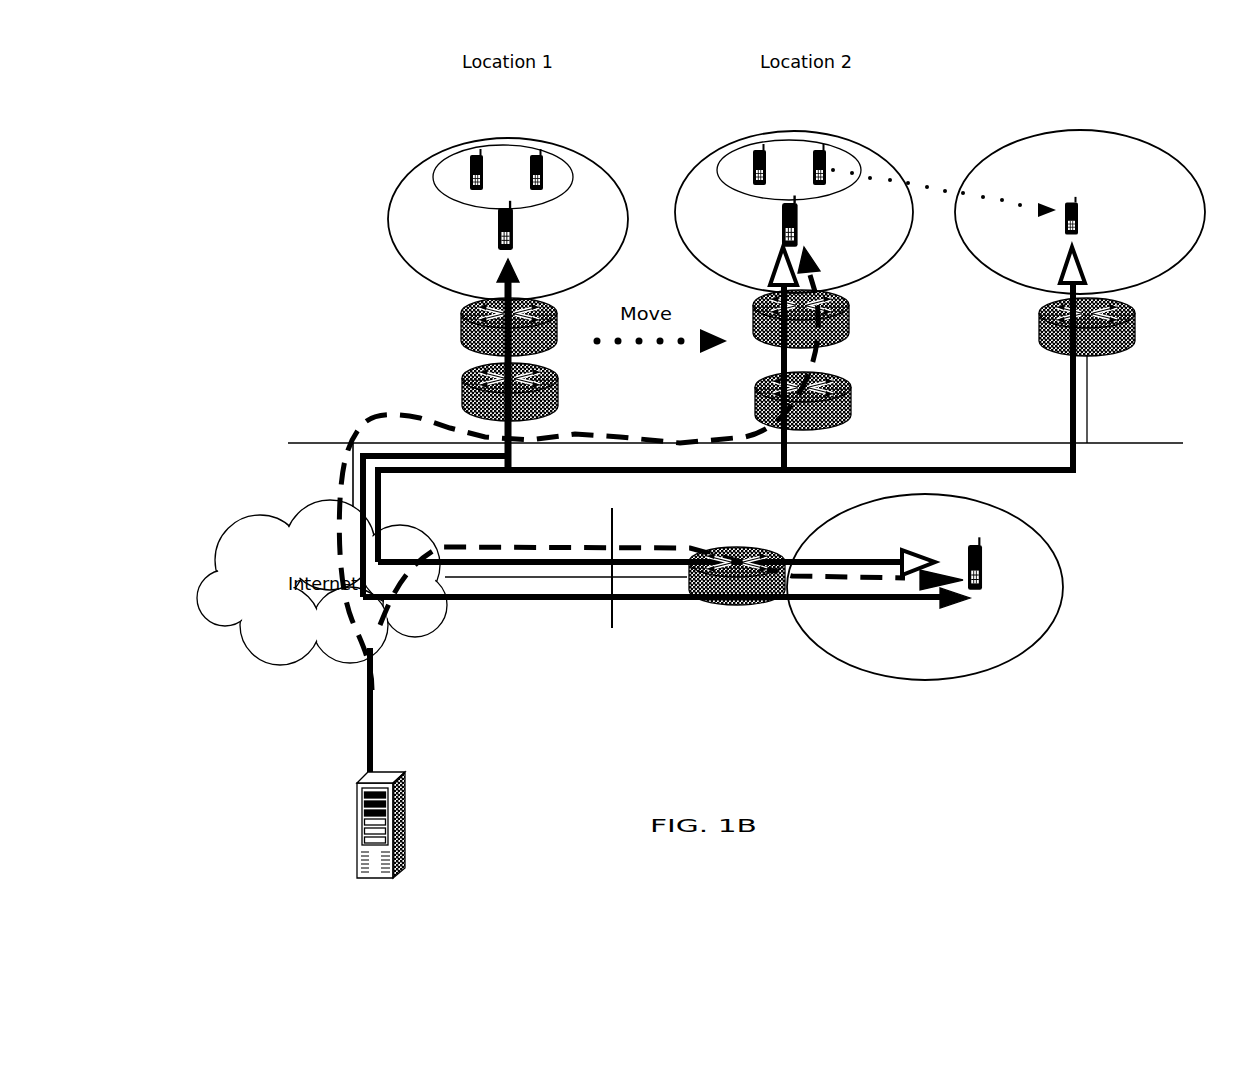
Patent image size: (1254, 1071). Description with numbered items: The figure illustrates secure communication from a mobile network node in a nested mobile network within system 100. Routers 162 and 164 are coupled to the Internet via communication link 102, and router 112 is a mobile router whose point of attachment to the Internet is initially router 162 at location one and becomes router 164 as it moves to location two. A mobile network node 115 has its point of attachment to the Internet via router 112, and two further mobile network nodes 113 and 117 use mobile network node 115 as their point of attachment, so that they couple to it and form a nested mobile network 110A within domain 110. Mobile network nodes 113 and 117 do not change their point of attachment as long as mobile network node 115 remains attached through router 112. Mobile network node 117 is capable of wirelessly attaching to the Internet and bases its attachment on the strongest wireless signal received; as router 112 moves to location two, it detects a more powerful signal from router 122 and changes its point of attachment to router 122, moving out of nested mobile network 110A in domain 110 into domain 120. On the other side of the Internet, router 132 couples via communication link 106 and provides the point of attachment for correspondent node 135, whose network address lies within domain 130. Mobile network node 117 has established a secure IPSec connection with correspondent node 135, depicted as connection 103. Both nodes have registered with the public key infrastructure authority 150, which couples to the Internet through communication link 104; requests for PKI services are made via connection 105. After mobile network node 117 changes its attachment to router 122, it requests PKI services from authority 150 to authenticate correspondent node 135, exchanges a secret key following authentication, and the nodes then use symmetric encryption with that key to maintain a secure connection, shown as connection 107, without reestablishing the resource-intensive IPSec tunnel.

The system 100 is at (314, 94).
The domain 110 is at (426, 263).
The nested mobile network 110A is at (440, 180).
The mobile network node 113 is at (470, 168).
The mobile network node 117 is at (530, 172).
The mobile network node 115 is at (515, 226).
The domain 120 is at (1152, 153).
The router 112 is at (462, 318).
The router 162 is at (558, 390).
The router 164 is at (852, 394).
The router 122 is at (1135, 326).
The communication link 102 is at (1162, 486).
The connection 105 is at (407, 438).
The communication link 106 is at (603, 548).
The connection 107 is at (603, 473).
The connection 103 is at (480, 602).
The router 132 is at (747, 600).
The domain 130 is at (937, 658).
The correspondent node 135 is at (1020, 578).
The communication link 104 is at (368, 728).
The PKI authority 150 is at (408, 852).